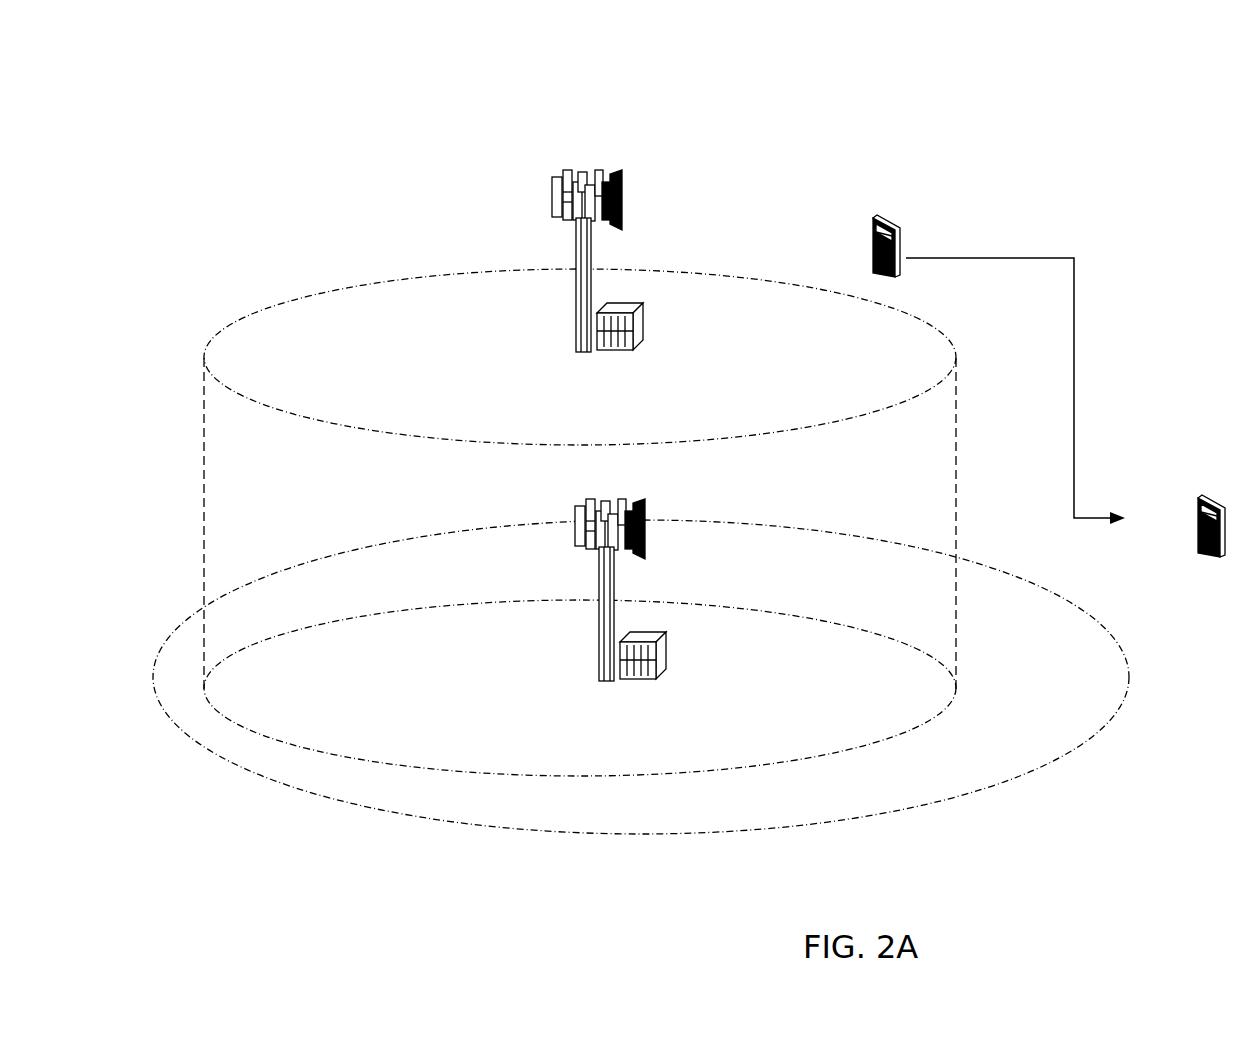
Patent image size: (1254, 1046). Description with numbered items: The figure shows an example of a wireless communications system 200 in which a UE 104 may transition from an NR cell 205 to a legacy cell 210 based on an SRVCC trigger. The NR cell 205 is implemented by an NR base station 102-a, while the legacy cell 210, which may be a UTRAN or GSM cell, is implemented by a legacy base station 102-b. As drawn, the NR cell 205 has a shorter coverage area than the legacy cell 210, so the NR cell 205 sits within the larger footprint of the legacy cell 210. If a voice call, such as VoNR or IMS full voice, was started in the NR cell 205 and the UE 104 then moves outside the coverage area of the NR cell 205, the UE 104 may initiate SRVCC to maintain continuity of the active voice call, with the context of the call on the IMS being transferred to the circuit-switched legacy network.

The wireless communications system 200 is at (176, 94).
The NR cell 205 is at (330, 428).
The legacy cell 210 is at (300, 784).
The NR base station 102-a is at (578, 345).
The legacy base station 102-b is at (600, 669).
The UE 104 is at (872, 243).